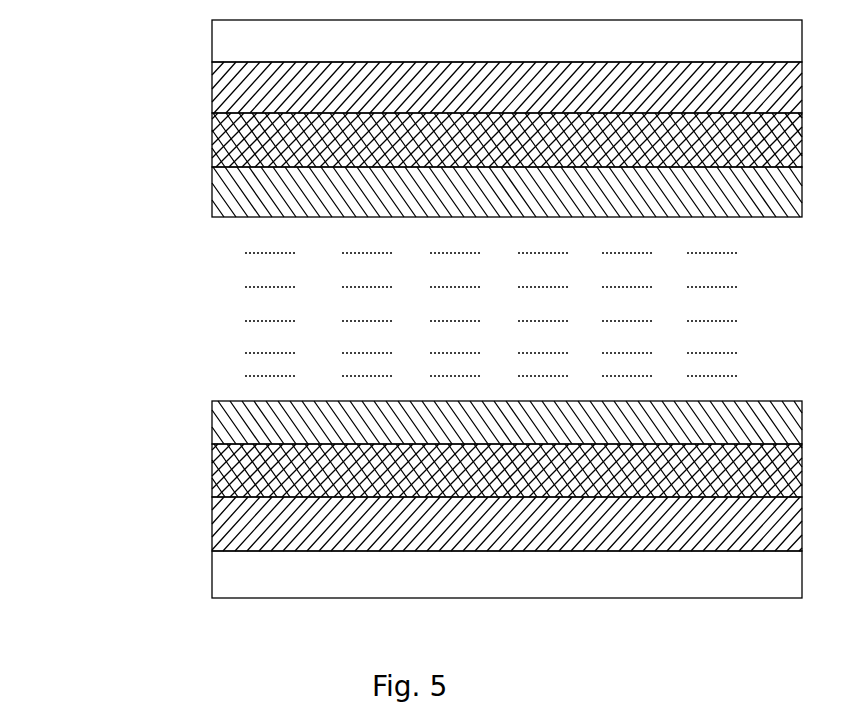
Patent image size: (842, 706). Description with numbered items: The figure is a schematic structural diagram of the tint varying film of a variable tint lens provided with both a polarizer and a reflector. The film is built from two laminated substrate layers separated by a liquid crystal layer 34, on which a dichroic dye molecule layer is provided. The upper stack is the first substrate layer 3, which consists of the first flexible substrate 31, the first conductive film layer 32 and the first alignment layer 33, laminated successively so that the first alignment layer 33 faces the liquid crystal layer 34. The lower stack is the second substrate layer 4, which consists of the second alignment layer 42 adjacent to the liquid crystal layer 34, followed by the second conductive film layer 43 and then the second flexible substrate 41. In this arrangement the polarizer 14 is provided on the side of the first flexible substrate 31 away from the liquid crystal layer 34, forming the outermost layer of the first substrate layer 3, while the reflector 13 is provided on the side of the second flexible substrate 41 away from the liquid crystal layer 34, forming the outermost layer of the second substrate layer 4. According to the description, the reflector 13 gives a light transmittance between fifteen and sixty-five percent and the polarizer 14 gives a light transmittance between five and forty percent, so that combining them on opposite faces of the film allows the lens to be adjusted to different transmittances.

The polarizer 14 is at (245, 47).
The first substrate layer 3 is at (80, 186).
The first flexible substrate 31 is at (222, 90).
The first conductive film layer 32 is at (222, 148).
The first alignment layer 33 is at (222, 203).
The liquid crystal layer 34 is at (255, 330).
The second substrate layer 4 is at (95, 505).
The second conductive film layer 43 is at (222, 433).
The second alignment layer 42 is at (222, 479).
The second flexible substrate 41 is at (222, 537).
The reflector 13 is at (232, 585).